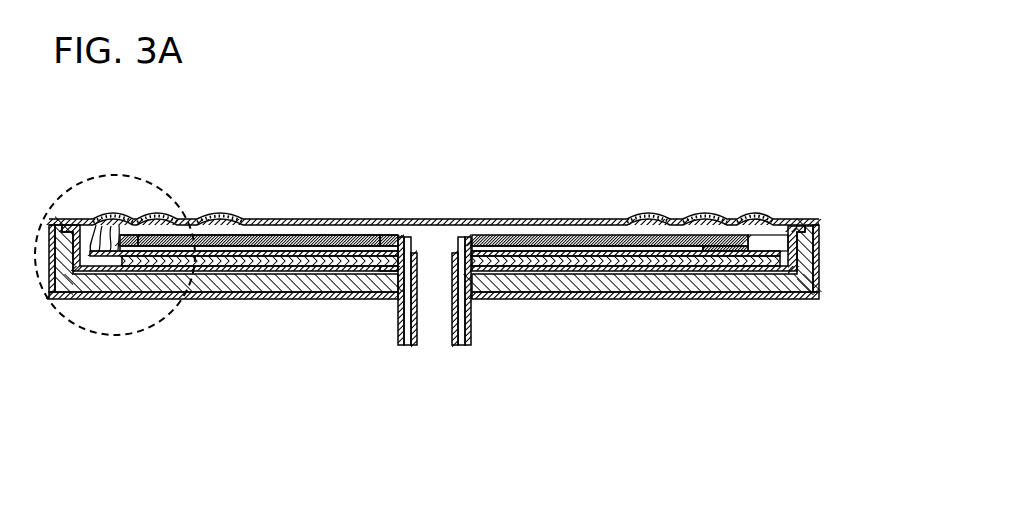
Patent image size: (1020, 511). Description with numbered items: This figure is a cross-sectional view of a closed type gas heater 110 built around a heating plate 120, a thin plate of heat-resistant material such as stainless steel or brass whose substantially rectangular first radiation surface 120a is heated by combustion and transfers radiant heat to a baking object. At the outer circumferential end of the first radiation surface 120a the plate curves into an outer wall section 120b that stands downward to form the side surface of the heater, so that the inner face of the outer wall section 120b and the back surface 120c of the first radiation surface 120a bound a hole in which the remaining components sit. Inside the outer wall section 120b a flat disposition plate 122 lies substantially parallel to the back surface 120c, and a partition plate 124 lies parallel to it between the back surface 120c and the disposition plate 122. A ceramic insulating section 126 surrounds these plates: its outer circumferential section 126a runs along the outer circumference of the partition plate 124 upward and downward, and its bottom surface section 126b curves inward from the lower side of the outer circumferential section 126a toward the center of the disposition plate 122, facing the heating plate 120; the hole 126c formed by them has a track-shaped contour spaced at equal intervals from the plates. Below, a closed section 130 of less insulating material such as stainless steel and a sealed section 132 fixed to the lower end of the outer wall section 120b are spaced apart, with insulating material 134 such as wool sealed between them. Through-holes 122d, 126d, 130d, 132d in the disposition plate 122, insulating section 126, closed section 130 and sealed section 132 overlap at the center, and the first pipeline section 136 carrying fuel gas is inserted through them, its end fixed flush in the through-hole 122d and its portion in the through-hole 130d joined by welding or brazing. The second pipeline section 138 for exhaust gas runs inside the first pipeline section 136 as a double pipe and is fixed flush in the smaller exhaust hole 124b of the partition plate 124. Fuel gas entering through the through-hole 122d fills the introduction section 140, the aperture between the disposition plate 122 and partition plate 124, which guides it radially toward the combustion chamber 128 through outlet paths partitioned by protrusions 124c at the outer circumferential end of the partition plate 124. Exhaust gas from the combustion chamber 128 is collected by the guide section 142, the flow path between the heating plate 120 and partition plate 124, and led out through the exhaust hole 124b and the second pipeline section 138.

The closed type gas heater 110 is at (572, 125).
The heating plate 120 is at (770, 247).
The first radiation surface 120a is at (510, 222).
The outer wall section 120b is at (823, 218).
The back surface 120c is at (466, 226).
The disposition plate 122 is at (750, 237).
The through-hole 122d is at (440, 232).
The partition plate 124 is at (600, 235).
The exhaust hole 124b is at (412, 232).
The protrusions 124c is at (118, 230).
The insulating section 126 is at (100, 240).
The outer circumferential section 126a is at (98, 221).
The bottom surface section 126b is at (178, 220).
The hole 126c is at (125, 222).
The through-hole 126d is at (432, 240).
The combustion chamber 128 is at (770, 247).
The closed section 130 is at (555, 272).
The through-hole 130d is at (398, 345).
The sealed section 132 is at (620, 295).
The through-hole 132d is at (400, 332).
The insulating material 134 is at (690, 283).
The first pipeline section 136 is at (472, 325).
The second pipeline section 138 is at (462, 330).
The introduction section 140 is at (230, 250).
The guide section 142 is at (293, 228).